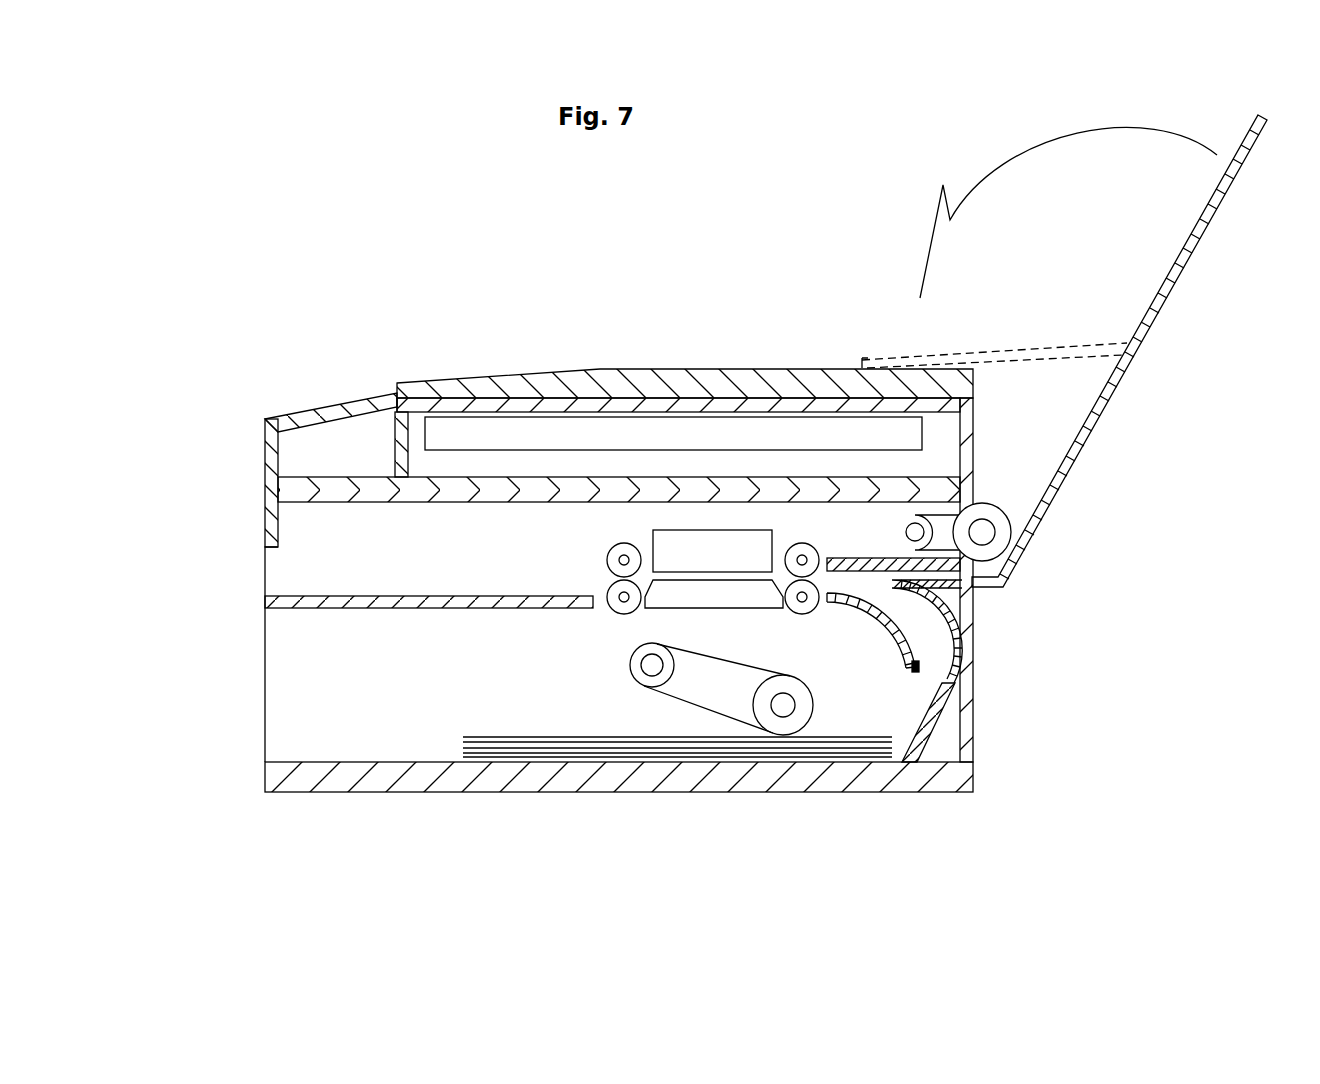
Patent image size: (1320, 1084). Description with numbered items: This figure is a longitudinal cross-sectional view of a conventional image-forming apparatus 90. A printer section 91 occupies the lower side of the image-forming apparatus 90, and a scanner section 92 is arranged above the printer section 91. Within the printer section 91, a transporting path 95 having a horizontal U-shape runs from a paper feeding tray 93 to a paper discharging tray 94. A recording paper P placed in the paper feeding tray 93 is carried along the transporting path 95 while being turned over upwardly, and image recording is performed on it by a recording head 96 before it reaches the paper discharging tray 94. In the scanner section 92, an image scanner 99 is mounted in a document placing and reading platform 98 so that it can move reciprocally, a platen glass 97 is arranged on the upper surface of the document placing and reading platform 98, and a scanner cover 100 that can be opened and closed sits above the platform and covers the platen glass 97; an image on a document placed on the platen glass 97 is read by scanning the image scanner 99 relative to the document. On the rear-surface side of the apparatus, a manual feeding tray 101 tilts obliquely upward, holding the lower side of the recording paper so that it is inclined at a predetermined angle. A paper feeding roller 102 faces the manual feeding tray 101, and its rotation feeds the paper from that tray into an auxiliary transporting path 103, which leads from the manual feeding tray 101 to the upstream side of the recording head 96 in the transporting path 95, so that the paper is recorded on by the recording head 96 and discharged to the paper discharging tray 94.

The image-forming apparatus 90 is at (637, 637).
The printer section 91 is at (693, 595).
The scanner section 92 is at (565, 387).
The paper feeding tray 93 is at (404, 757).
The paper discharging tray 94 is at (461, 597).
The transporting path 95 is at (911, 665).
The recording head 96 is at (680, 530).
The platen glass 97 is at (727, 398).
The document placing and reading platform 98 is at (265, 452).
The image scanner 99 is at (523, 417).
The scanner cover 100 is at (643, 370).
The manual feeding tray 101 is at (1098, 433).
The paper feeding roller 102 is at (987, 503).
The auxiliary transporting path 103 is at (952, 583).
The recording paper P is at (513, 735).